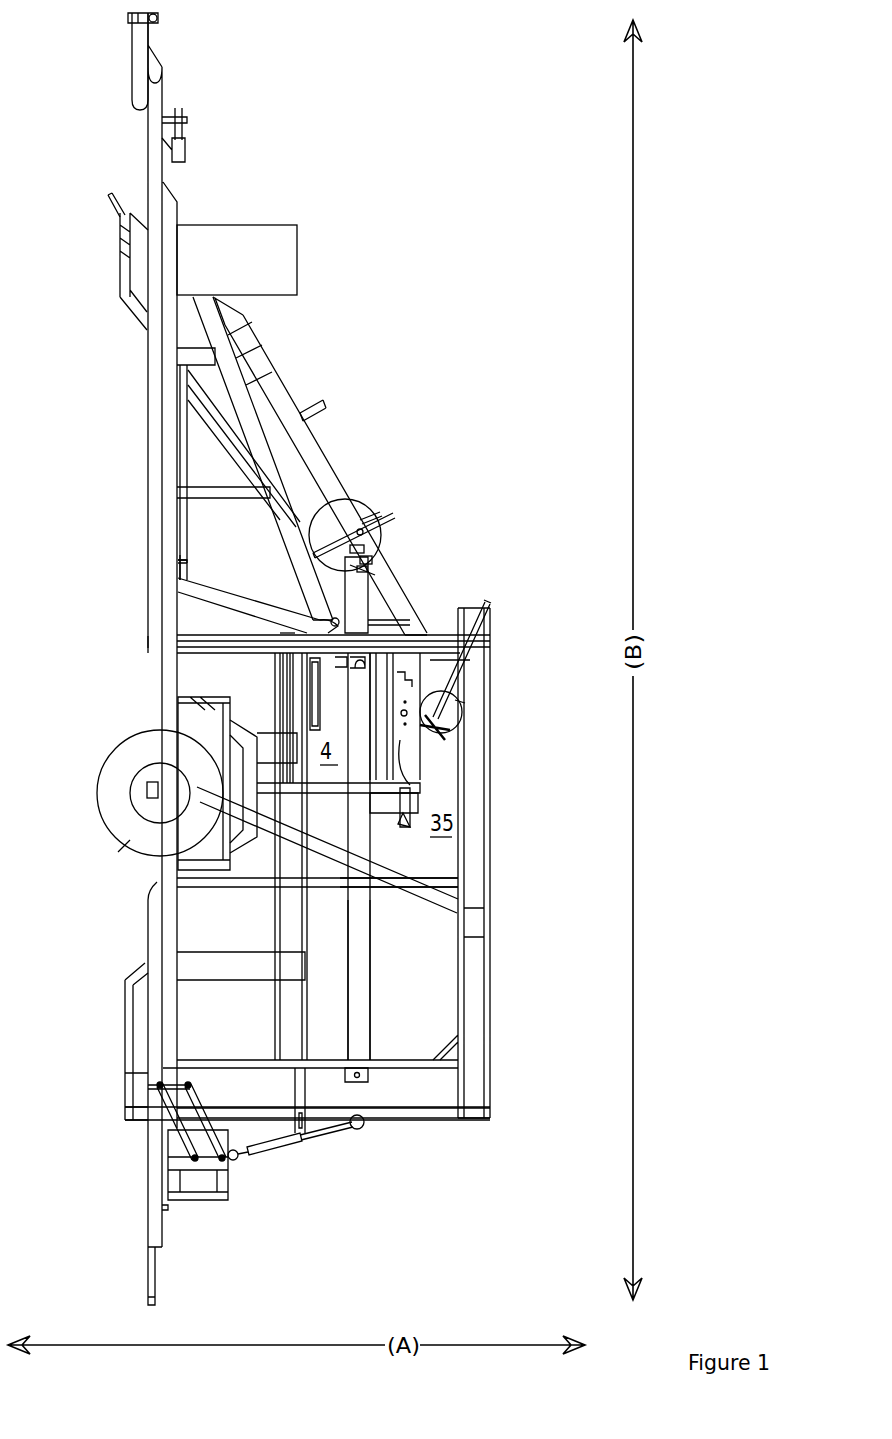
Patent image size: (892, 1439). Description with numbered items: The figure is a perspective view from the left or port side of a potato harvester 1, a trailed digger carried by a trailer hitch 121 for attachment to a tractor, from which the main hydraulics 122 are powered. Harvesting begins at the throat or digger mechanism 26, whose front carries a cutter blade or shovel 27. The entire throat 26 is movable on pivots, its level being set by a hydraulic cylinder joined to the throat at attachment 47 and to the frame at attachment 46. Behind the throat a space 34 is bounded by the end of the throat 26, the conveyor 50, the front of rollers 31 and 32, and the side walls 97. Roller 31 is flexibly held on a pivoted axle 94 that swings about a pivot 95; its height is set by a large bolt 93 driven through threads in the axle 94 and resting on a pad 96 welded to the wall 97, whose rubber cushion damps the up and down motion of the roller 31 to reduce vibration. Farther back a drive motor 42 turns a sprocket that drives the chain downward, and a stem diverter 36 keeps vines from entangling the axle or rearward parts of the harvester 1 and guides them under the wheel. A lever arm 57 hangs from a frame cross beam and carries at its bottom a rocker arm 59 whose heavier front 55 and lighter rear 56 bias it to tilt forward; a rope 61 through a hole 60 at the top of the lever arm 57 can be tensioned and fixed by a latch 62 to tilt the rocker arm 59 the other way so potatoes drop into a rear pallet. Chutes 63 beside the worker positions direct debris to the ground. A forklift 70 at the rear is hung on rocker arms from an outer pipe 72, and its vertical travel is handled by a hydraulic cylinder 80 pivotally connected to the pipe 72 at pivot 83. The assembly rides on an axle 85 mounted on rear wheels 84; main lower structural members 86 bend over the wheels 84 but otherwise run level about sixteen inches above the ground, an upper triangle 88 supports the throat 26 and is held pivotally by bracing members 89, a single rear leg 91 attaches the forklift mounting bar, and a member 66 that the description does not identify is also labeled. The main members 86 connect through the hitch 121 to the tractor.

The potato harvester 1 is at (482, 1053).
The throat or digger mechanism 26 is at (298, 455).
The cutter blade or shovel 27 is at (108, 208).
The roller 31 is at (450, 705).
The roller 32 is at (420, 745).
The space 34 is at (405, 672).
The stem diverter 36 is at (382, 866).
The drive motor 42 is at (385, 870).
The attachment 46 is at (180, 563).
The attachment 47 is at (178, 562).
The conveyor 50 is at (317, 686).
The front of rocker arm 55 is at (337, 522).
The rear of rocker arm 56 is at (313, 540).
The lever arm 57 is at (362, 558).
The rocker arm 59 is at (357, 547).
The hole 60 is at (365, 533).
The rope 61 is at (368, 552).
The latch 62 is at (370, 562).
The chutes 63 is at (262, 738).
The ground pole 66 is at (150, 1262).
The forklift 70 is at (200, 1197).
The outer pipe 72 is at (172, 1160).
The hydraulic cylinder 80 is at (300, 1140).
The pivot 83 is at (237, 1160).
The rear wheels 84 is at (145, 840).
The axle 85 is at (150, 790).
The main lower structural members 86 is at (165, 595).
The upper triangle 88 is at (240, 395).
The bracing members 89 is at (285, 636).
The single rear leg 91 is at (188, 1078).
The bolt 93 is at (435, 715).
The pivoted axle 94 is at (445, 668).
The pivot 95 is at (460, 636).
The pad 96 is at (425, 735).
The side walls 97 is at (415, 800).
The trailer hitch 121 is at (158, 76).
The main hydraulics 122 is at (300, 255).